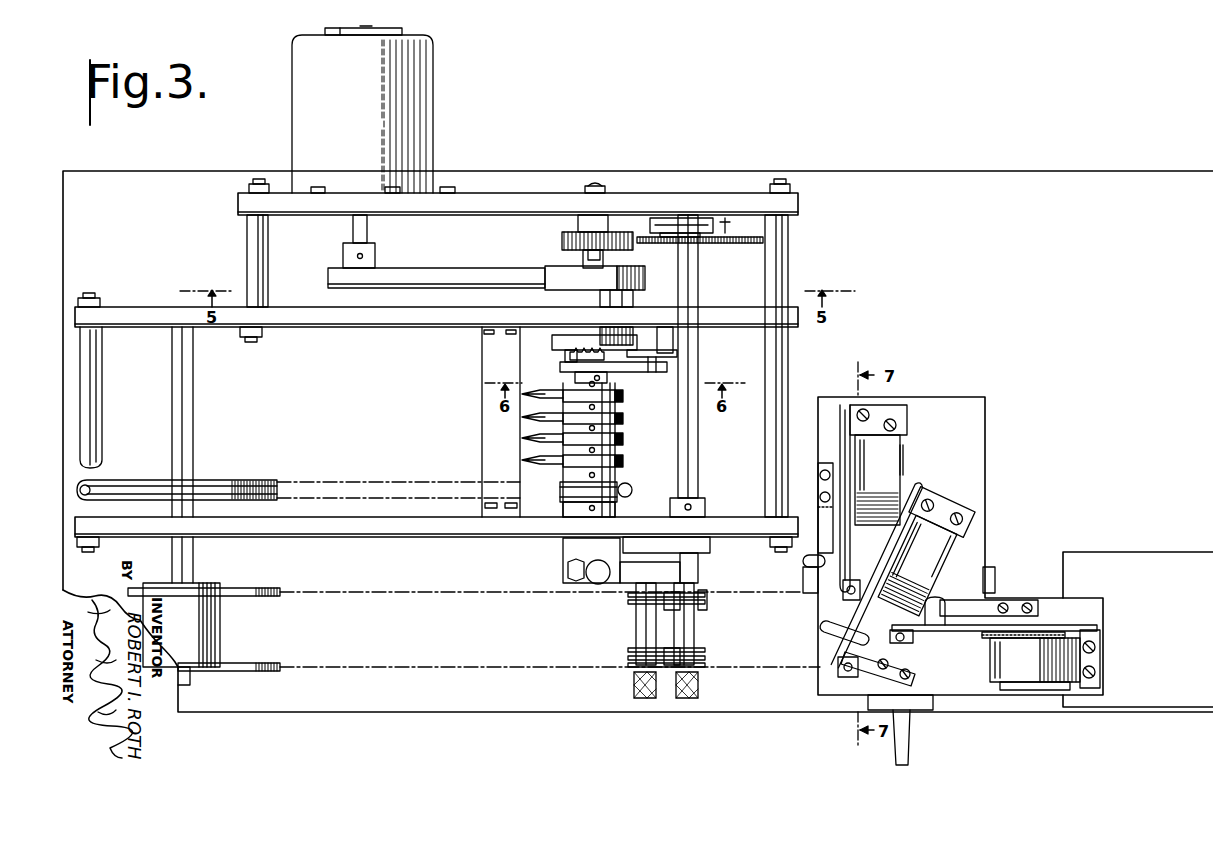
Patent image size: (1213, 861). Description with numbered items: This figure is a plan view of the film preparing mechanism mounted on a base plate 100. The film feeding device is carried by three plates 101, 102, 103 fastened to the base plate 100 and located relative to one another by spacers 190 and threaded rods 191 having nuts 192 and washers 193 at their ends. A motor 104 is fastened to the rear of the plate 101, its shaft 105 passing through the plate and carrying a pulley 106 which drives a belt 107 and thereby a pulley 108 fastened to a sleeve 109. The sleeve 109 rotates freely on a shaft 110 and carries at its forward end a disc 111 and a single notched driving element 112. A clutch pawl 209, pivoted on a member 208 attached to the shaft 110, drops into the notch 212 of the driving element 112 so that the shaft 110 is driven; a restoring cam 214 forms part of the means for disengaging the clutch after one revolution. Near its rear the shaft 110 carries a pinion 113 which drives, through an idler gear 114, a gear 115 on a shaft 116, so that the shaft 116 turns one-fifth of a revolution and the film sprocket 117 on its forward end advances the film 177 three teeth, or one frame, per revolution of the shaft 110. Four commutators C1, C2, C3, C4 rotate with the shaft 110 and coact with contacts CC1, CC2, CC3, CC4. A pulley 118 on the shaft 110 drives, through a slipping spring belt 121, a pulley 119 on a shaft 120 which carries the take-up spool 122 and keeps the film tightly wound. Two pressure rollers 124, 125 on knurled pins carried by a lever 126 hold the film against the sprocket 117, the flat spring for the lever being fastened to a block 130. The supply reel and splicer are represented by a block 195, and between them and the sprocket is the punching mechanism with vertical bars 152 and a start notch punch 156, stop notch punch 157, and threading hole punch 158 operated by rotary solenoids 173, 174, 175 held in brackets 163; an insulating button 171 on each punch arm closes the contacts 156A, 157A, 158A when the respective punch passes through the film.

The base plate 100 is at (1042, 171).
The plate 101 is at (800, 207).
The plate 102 is at (800, 323).
The plate 103 is at (445, 537).
The motor 104 is at (433, 118).
The motor shaft 105 is at (367, 234).
The pulley 106 is at (336, 268).
The belt 107 is at (395, 275).
The pulley 108 is at (642, 273).
The sleeve 109 is at (633, 305).
The shaft 110 is at (582, 258).
The disc 111 is at (555, 345).
The single notched driving element 112 is at (565, 360).
The pinion 113 is at (600, 248).
The idler gear 114 is at (625, 235).
The gear 115 is at (728, 244).
The shaft 116 is at (698, 351).
The film sprocket 117 is at (708, 598).
The pulley 118 is at (629, 485).
The pulley 119 is at (232, 481).
The shaft 120 is at (193, 438).
The spring belt 121 is at (322, 481).
The takeup spool 122 is at (280, 589).
The pressure roller 124 is at (697, 634).
The pressure roller 125 is at (637, 633).
The lever 126 is at (625, 584).
The block 130 is at (485, 506).
The vertical bar 152 is at (990, 567).
The start notch punch 156 is at (848, 592).
The contacts 156A is at (815, 558).
The stop notch punch 157 is at (856, 676).
The contacts 157A is at (835, 628).
The threading hole punch 158 is at (915, 642).
The contacts 158A is at (985, 603).
The bracket 163 is at (905, 473).
The button 171 is at (845, 572).
The rotary solenoid 173 is at (890, 443).
The rotary solenoid 174 is at (946, 543).
The rotary solenoid 175 is at (1100, 690).
The film 177 is at (402, 669).
The spacer 190 is at (788, 253).
The threaded rod 191 is at (257, 183).
The nut 192 is at (100, 300).
The washer 193 is at (104, 303).
The block 195 is at (1135, 552).
The member 208 is at (615, 372).
The clutch pawl 209 is at (630, 353).
The notch 212 is at (598, 348).
The restoring cam 214 is at (532, 345).
The commutator C1 is at (625, 452).
The commutator C2 is at (625, 437).
The commutator C3 is at (625, 419).
The commutator C4 is at (625, 401).
The contact CC1 is at (522, 463).
The contact CC2 is at (522, 439).
The contact CC3 is at (522, 418).
The contact CC4 is at (522, 396).